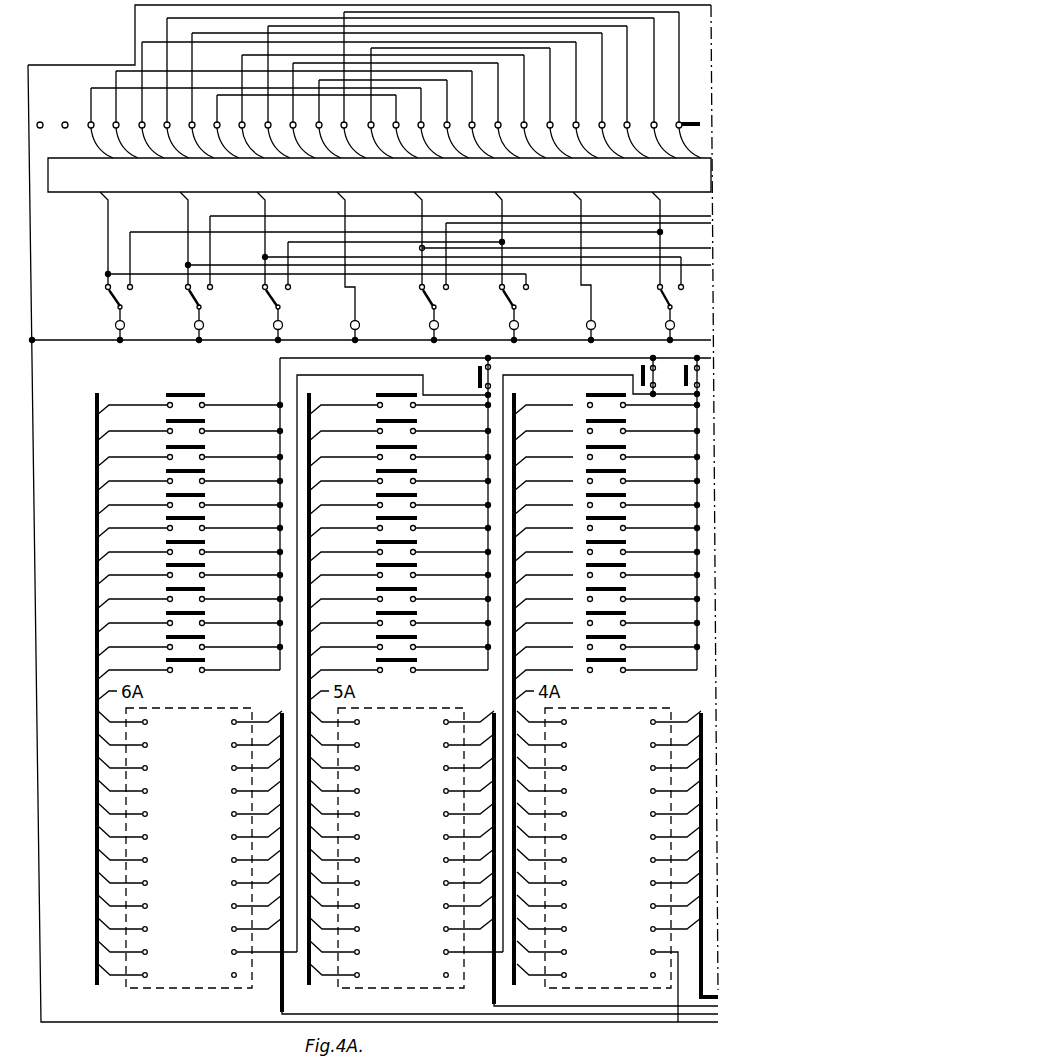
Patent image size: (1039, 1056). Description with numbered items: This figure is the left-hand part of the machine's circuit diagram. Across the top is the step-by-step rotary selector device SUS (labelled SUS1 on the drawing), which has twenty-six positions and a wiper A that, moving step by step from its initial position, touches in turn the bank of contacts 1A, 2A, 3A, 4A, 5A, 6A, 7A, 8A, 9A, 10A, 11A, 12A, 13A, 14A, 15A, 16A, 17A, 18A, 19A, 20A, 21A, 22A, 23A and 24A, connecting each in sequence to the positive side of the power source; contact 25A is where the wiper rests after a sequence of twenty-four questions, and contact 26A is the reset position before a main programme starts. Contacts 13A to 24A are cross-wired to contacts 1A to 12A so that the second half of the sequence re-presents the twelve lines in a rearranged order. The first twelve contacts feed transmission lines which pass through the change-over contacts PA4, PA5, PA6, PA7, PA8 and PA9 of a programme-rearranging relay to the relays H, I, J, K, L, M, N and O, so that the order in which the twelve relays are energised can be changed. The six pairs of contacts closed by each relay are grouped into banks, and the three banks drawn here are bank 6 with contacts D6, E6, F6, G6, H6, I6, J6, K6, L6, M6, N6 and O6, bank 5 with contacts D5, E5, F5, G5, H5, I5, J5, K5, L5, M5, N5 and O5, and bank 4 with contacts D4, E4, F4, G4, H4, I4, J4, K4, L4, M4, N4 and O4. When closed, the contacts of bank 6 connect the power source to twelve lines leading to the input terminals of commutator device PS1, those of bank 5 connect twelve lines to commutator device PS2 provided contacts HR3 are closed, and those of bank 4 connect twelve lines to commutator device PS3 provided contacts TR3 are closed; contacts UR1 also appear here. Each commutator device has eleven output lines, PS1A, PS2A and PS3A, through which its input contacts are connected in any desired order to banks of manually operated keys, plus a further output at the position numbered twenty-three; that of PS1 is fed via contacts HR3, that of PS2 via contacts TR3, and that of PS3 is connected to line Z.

The selector contact 26A is at (51, 139).
The selector contact 25A is at (74, 113).
The selector contact 24A is at (97, 140).
The selector contact 23A is at (113, 154).
The selector contact 22A is at (143, 140).
The selector contact 21A is at (164, 154).
The selector contact 20A is at (187, 140).
The selector contact 19A is at (212, 154).
The selector contact 18A is at (247, 154).
The selector contact 17A is at (274, 140).
The selector contact 16A is at (294, 154).
The selector contact 15A is at (317, 140).
The selector contact 14A is at (343, 154).
The selector contact 13A is at (369, 140).
The selector contact 12A is at (391, 154).
The selector contact 11A is at (425, 154).
The selector contact 10A is at (457, 154).
The selector contact 9A is at (484, 154).
The selector contact 8A is at (511, 154).
The selector contact 7A is at (536, 154).
The selector contact 6A is at (561, 154).
The selector contact 5A is at (587, 154).
The selector contact 4A is at (611, 154).
The selector contact 3A is at (637, 154).
The selector contact 2A is at (666, 154).
The selector contact 1A is at (693, 140).
The sustain contact SUS1 is at (41, 113).
The step-by-step selector device SUS is at (240, 157).
The wiper A is at (693, 118).
The relay contacts PA9 is at (124, 296).
The relay contacts PA8 is at (203, 296).
The relay contacts PA7 is at (282, 296).
The relay contacts PA6 is at (438, 296).
The relay contacts PA5 is at (518, 296).
The relay contacts PA4 is at (660, 293).
The relay O is at (115, 325).
The relay N is at (194, 325).
The relay M is at (273, 325).
The relay L is at (350, 325).
The relay K is at (429, 325).
The relay J is at (509, 325).
The relay I is at (586, 325).
The relay H is at (676, 321).
The relay contacts HR3 is at (478, 377).
The relay contacts UR1 is at (637, 368).
The relay contacts TR3 is at (677, 378).
The relay contacts D6 is at (195, 387).
The relay contacts E6 is at (168, 429).
The relay contacts F6 is at (205, 447).
The relay contacts G6 is at (205, 471).
The relay contacts H6 is at (205, 495).
The relay contacts I6 is at (205, 518).
The relay contacts J6 is at (205, 542).
The relay contacts K6 is at (205, 565).
The relay contacts L6 is at (205, 589).
The relay contacts M6 is at (205, 613).
The relay contacts N6 is at (205, 637).
The relay contacts O6 is at (205, 660).
The relay contacts D5 is at (377, 404).
The relay contacts E5 is at (377, 430).
The relay contacts F5 is at (417, 447).
The relay contacts G5 is at (417, 471).
The relay contacts H5 is at (417, 495).
The relay contacts I5 is at (417, 518).
The relay contacts J5 is at (417, 542).
The relay contacts K5 is at (417, 565).
The relay contacts L5 is at (417, 589).
The relay contacts M5 is at (417, 613).
The relay contacts N5 is at (417, 637).
The relay contacts O5 is at (417, 660).
The relay contacts D4 is at (587, 404).
The relay contacts E4 is at (587, 430).
The relay contacts F4 is at (626, 447).
The relay contacts G4 is at (626, 471).
The relay contacts H4 is at (626, 495).
The relay contacts I4 is at (626, 518).
The relay contacts J4 is at (626, 542).
The relay contacts K4 is at (626, 565).
The relay contacts L4 is at (626, 589).
The relay contacts M4 is at (626, 613).
The relay contacts N4 is at (626, 637).
The relay contacts O4 is at (626, 660).
The bank of contacts 6 is at (192, 697).
The bank of contacts 5 is at (404, 697).
The bank of contacts 4 is at (611, 697).
The commutator device PS1 is at (205, 706).
The commutator device PS2 is at (418, 706).
The commutator device PS3 is at (626, 706).
The output lines PS1A is at (282, 998).
The output lines PS2A is at (494, 995).
The output lines PS3A is at (702, 1000).
The line Z is at (678, 972).